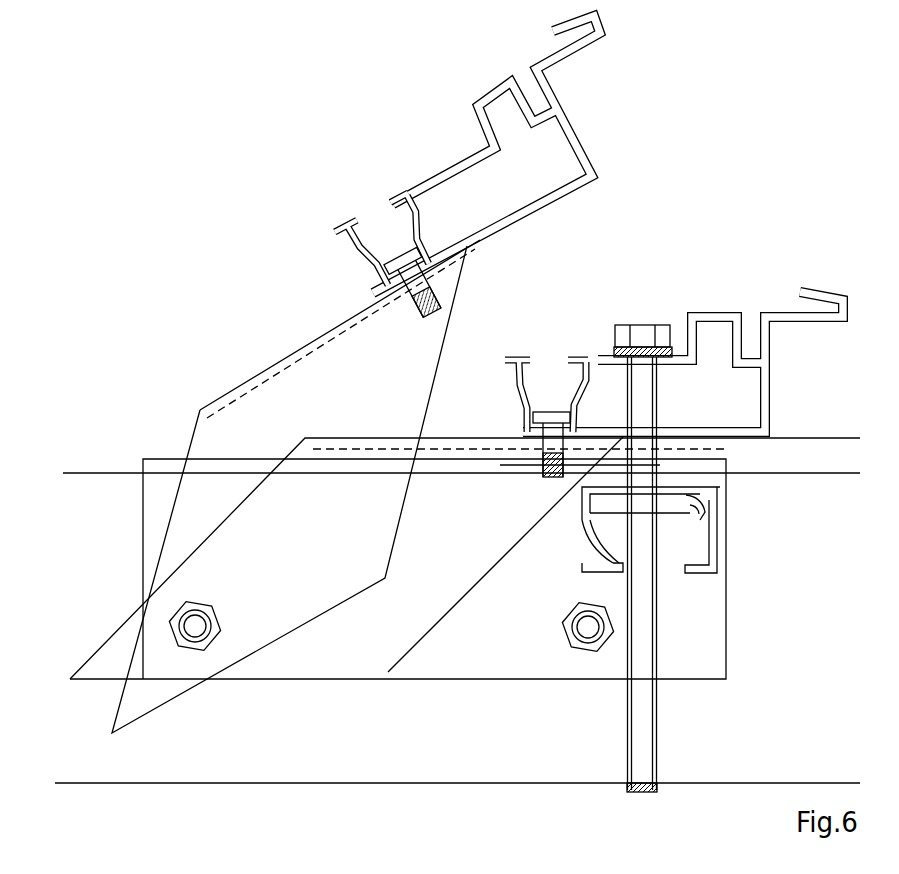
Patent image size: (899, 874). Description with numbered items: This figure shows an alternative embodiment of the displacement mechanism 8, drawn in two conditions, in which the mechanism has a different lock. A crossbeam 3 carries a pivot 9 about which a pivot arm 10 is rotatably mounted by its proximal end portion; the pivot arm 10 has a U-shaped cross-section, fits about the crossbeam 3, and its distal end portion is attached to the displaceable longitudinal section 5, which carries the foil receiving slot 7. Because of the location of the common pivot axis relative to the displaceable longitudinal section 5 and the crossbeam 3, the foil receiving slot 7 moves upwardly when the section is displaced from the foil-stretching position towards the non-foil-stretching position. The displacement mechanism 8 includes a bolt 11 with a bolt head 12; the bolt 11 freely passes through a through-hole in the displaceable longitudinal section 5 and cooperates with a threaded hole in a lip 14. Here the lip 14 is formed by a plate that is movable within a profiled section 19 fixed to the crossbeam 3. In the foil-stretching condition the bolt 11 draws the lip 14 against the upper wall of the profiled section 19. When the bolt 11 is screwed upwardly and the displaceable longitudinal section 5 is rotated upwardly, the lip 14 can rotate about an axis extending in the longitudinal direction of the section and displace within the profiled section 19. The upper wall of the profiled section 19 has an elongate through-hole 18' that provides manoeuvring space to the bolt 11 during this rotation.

The crossbeam 3 is at (472, 668).
The displaceable longitudinal section 5 is at (574, 131).
The foil receiving slot 7 is at (373, 245).
The displacement mechanism 8 is at (268, 362).
The pivot 9 is at (193, 652).
The pivot arm 10 is at (270, 625).
The bolt 11 is at (630, 748).
The bolt head 12 is at (638, 335).
The lip 14 is at (695, 500).
The elongate through-hole 18' is at (552, 685).
The profiled section 19 is at (687, 492).